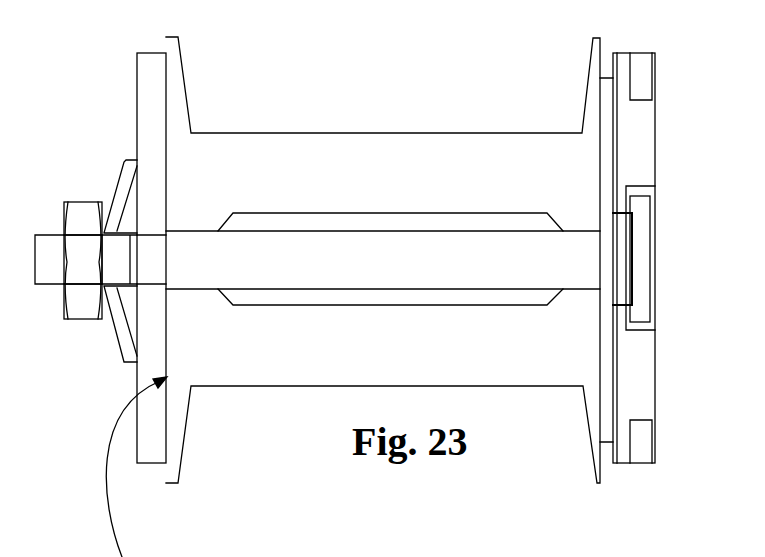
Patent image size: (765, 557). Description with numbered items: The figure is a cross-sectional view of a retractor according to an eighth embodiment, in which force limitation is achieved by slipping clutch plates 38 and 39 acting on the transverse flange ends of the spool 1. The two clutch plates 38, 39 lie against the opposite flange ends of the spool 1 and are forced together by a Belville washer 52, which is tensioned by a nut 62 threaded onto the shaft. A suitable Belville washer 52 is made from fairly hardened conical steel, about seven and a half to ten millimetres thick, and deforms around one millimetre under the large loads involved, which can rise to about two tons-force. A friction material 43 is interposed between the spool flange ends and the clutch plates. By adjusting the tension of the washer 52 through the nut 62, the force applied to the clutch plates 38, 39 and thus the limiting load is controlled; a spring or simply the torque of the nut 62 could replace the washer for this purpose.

The spool 1 is at (258, 363).
The slipping clutch plate 38 is at (149, 90).
The slipping clutch plate 39 is at (631, 151).
The friction material 43 is at (608, 430).
The Belville washer 52 is at (123, 175).
The nut 62 is at (75, 212).